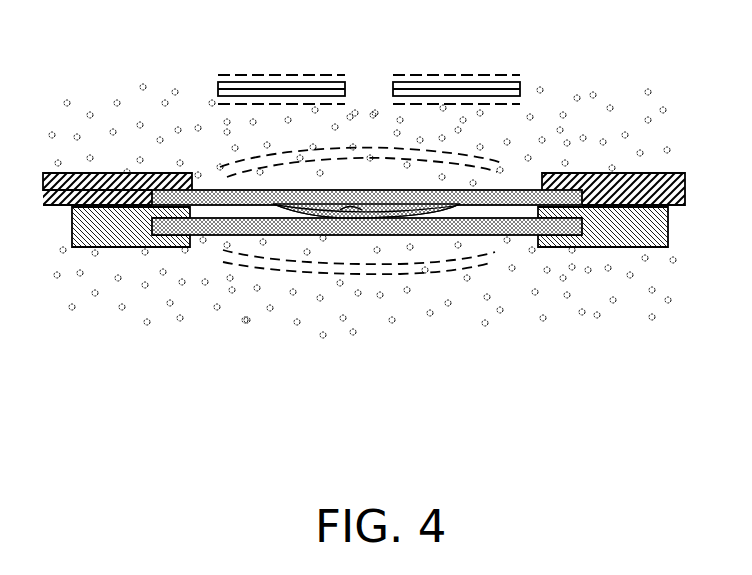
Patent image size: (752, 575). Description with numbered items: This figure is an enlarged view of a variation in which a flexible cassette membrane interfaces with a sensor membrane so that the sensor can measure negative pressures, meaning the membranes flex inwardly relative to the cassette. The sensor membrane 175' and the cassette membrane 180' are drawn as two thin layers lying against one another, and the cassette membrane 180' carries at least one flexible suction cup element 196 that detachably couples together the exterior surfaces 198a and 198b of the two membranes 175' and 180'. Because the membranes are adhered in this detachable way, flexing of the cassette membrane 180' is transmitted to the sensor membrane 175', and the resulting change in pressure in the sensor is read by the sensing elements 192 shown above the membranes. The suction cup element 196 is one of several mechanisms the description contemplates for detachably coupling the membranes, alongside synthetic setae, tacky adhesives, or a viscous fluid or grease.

The sensor membrane 175' is at (335, 127).
The cassette membrane 180' is at (367, 287).
The sensing elements 192 is at (433, 82).
The flexible suction cup element 196 is at (320, 212).
The exterior surface of sensor membrane 198a is at (373, 208).
The exterior surface of cassette membrane 198b is at (320, 212).